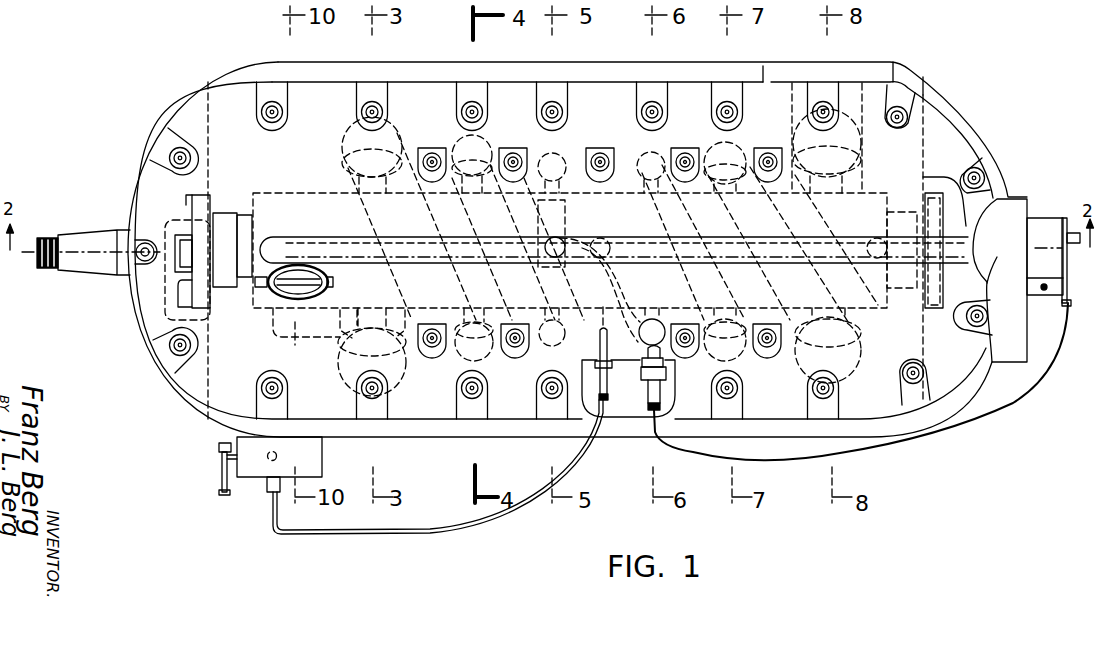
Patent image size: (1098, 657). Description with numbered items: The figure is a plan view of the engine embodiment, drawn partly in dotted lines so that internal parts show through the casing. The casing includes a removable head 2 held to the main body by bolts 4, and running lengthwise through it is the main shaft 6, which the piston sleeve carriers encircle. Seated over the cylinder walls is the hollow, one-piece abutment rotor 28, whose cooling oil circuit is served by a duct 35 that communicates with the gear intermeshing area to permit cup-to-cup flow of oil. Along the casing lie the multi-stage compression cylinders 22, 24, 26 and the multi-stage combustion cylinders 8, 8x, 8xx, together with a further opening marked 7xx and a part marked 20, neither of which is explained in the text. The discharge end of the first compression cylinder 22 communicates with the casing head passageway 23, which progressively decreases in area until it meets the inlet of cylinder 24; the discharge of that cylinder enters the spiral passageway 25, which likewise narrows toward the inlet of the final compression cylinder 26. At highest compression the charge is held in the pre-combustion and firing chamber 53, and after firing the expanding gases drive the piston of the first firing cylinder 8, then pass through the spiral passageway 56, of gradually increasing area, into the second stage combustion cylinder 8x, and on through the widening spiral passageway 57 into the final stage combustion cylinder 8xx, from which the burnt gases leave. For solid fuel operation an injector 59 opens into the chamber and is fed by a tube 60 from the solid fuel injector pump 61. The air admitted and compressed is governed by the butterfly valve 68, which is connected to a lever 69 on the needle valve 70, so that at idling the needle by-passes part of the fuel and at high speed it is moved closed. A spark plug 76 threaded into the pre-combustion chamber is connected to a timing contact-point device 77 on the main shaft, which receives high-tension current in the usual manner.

The removable head 2 is at (577, 249).
The bolts 4 is at (536, 113).
The main shaft 6 is at (83, 252).
The first firing cylinder 8 is at (659, 156).
The second stage combustion cylinder 8x is at (725, 251).
The final stage combustion cylinder 8xx is at (827, 233).
The opening 7xx is at (553, 160).
The support member 20 is at (306, 336).
The first compression cylinder 22 is at (353, 375).
The casing head passageway 23 is at (372, 221).
The compression cylinder 24 is at (466, 353).
The spiral passageway 25 is at (476, 218).
The final compression cylinder 26 is at (547, 343).
The abutment rotor 28 is at (570, 250).
The duct 35 is at (173, 290).
The pre-combustion and firing chamber 53 is at (608, 307).
The spiral passageway 56 is at (658, 215).
The spiral passageway 57 is at (734, 217).
The injector 59 is at (608, 385).
The tube 60 is at (440, 535).
The solid fuel injector pump 61 is at (279, 464).
The butterfly valve 68 is at (330, 288).
The lever 69 is at (222, 470).
The needle valve 70 is at (227, 444).
The spark plug 76 is at (661, 390).
The timing contact-point device 77 is at (1069, 253).